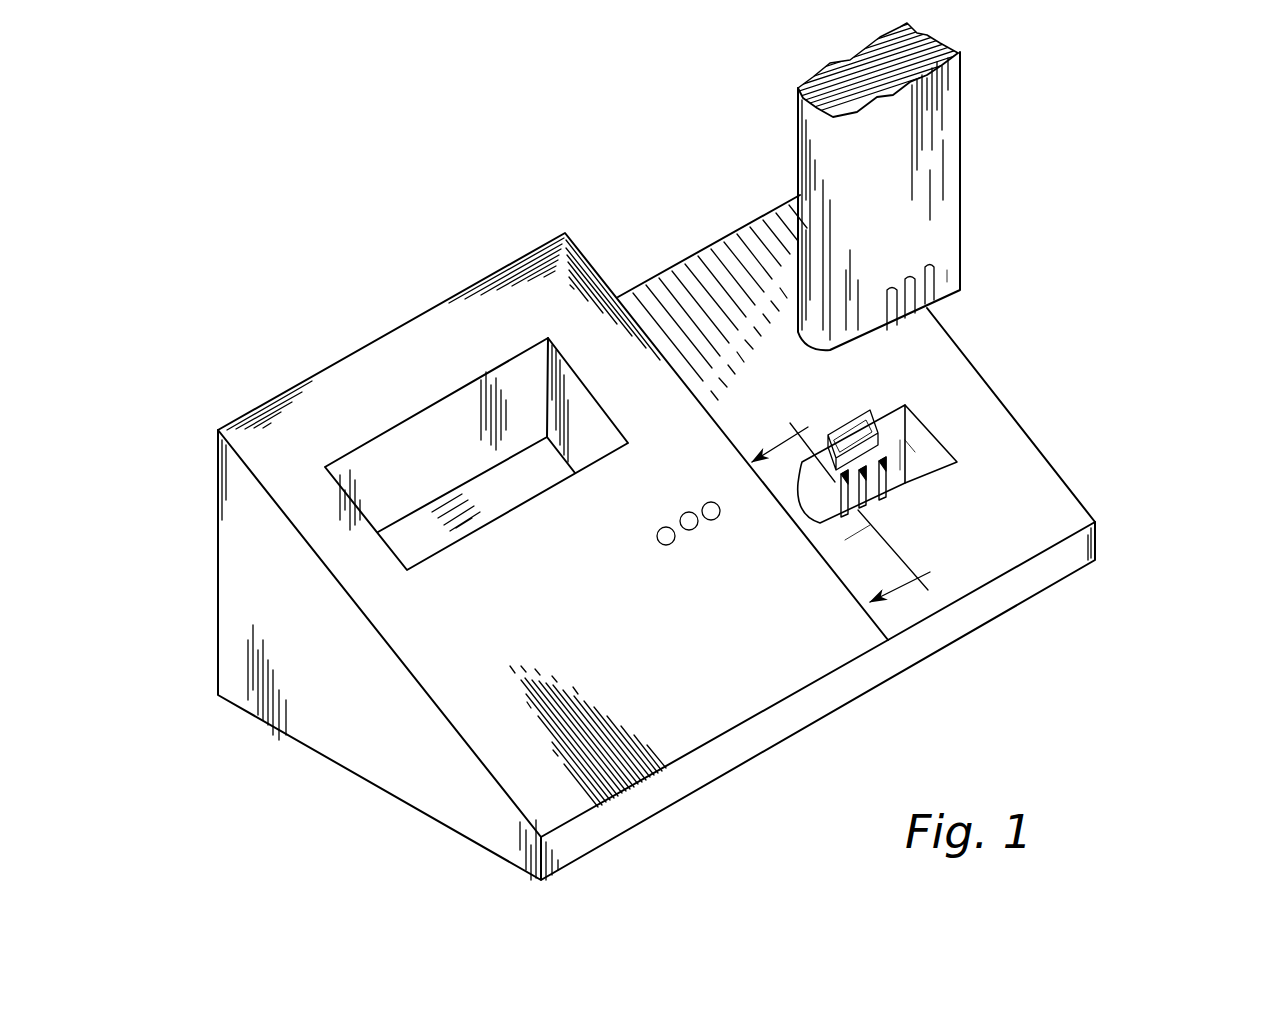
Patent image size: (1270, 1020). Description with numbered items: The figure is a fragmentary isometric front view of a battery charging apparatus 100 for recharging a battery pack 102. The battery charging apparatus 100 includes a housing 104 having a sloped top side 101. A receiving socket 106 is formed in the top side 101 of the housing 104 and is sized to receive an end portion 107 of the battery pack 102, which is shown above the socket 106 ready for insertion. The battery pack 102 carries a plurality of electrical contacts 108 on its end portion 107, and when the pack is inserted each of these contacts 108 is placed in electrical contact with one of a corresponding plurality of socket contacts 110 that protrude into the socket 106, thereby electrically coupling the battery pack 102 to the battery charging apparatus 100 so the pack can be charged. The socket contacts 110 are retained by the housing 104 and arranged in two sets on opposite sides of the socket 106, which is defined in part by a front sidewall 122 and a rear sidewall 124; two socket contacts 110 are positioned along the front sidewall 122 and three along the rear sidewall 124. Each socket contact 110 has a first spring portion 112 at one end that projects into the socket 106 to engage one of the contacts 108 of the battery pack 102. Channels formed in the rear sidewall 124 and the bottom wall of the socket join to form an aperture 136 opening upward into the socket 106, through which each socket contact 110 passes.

The battery charging apparatus 100 is at (1057, 648).
The sloped top side 101 is at (943, 350).
The battery pack 102 is at (947, 117).
The housing 104 is at (732, 250).
The receiving socket 106 is at (828, 505).
The end portion 107 is at (947, 275).
The electrical contacts 108 is at (926, 268).
The socket contacts 110 is at (907, 500).
The first spring portion 112 is at (897, 430).
The front sidewall 122 is at (858, 523).
The rear sidewall 124 is at (900, 452).
The aperture 136 is at (834, 432).